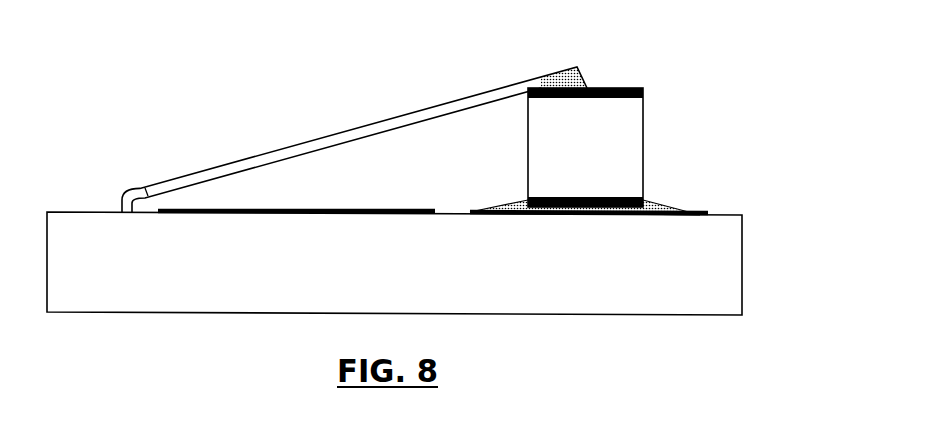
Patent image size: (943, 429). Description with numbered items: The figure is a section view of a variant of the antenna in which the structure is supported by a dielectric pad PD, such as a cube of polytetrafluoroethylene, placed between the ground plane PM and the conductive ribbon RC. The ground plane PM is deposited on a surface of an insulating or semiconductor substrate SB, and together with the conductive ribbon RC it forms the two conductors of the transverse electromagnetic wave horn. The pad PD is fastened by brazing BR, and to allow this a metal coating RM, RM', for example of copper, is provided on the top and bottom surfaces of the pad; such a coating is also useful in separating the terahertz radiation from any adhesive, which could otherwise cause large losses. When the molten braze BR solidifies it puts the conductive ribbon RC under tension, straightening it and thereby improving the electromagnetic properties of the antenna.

The substrate SB is at (725, 250).
The ground plane PM is at (345, 210).
The conductive ribbon RC is at (263, 154).
The brazing BR is at (650, 208).
The dielectric pad PD is at (528, 150).
The metal coating RM is at (553, 113).
The metal coating RM' is at (544, 190).